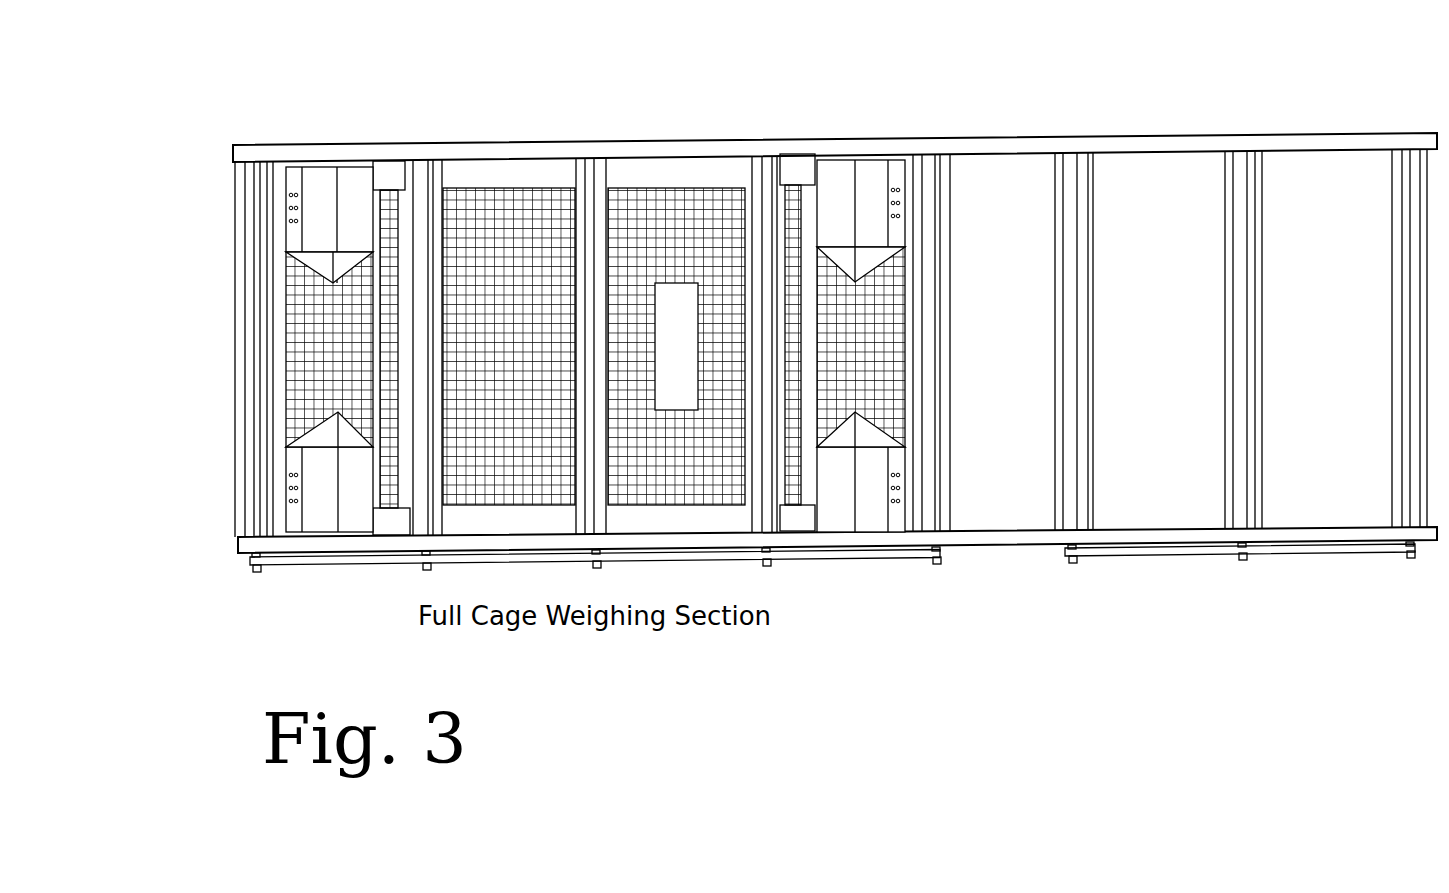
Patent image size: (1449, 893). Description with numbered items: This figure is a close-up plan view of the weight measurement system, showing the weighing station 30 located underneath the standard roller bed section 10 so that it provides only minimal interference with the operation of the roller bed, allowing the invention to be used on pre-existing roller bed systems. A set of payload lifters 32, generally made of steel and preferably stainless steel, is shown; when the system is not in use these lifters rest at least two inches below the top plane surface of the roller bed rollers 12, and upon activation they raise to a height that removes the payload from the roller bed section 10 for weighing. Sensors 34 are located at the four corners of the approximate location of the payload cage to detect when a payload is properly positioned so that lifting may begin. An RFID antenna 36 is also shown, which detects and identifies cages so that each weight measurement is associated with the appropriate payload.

The roller bed section 10 is at (1017, 145).
The roller bed rollers 12 is at (245, 262).
The weighing station 30 is at (512, 330).
The payload lifters 32 is at (388, 202).
The sensors 34 is at (325, 470).
The RFID antenna 36 is at (680, 320).